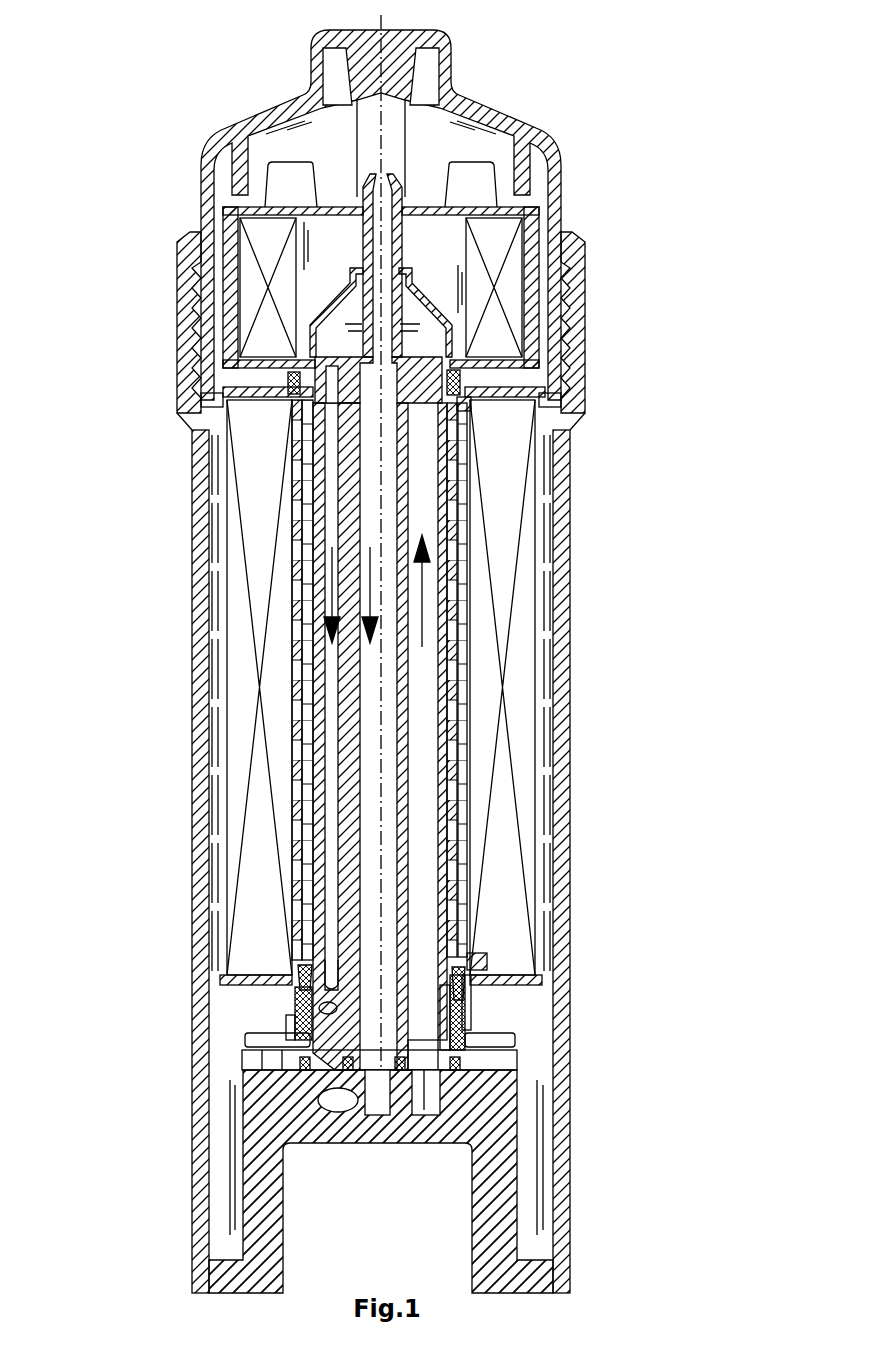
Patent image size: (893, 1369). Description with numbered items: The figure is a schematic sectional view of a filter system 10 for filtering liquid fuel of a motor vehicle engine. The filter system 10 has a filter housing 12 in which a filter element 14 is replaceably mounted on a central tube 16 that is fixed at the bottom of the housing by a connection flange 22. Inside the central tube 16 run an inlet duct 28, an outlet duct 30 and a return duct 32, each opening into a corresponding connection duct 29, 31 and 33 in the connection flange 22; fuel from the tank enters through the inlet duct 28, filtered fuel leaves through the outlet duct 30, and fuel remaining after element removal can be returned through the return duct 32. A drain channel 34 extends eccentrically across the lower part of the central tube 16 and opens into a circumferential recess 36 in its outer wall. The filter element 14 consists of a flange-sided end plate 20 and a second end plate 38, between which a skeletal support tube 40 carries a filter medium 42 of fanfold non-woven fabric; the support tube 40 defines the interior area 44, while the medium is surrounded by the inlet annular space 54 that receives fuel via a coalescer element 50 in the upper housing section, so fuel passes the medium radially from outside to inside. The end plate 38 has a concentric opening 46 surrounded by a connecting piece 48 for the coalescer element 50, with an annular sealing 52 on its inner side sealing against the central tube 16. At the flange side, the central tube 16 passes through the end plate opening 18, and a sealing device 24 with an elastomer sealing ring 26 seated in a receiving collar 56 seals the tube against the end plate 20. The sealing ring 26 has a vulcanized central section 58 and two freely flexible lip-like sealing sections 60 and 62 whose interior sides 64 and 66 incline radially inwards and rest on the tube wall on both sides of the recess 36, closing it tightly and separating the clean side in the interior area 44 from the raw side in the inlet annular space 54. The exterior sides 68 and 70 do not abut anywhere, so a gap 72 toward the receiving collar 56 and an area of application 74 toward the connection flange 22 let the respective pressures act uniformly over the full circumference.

The filter system 10 is at (158, 178).
The filter housing 12 is at (183, 681).
The filter element 14 is at (270, 600).
The central tube 16 is at (377, 611).
The flange-sided end plate opening 18 is at (468, 978).
The flange-sided end plate 20 is at (545, 982).
The connection flange 22 is at (192, 1203).
The sealing device 24 is at (430, 1020).
The sealing ring 26 is at (480, 1018).
The inlet duct 28 is at (430, 522).
The connection duct 29 is at (430, 1103).
The outlet duct 30 is at (330, 507).
The connection duct 31 is at (338, 1105).
The return duct 32 is at (362, 506).
The connection duct 33 is at (373, 1115).
The drain channel 34 is at (362, 1000).
The recess 36 is at (440, 1003).
The second end plate 38 is at (548, 388).
The support tube 40 is at (453, 617).
The filter medium 42 is at (523, 700).
The interior area 44 is at (455, 577).
The concentric opening 46 is at (470, 405).
The connecting piece 48 is at (284, 378).
The coalescer element 50 is at (546, 240).
The annular sealing 52 is at (452, 378).
The inlet annular space 54 is at (220, 718).
The receiving collar 56 is at (295, 1008).
The central section 58 is at (293, 1022).
The sealing section 60 is at (448, 972).
The sealing section 62 is at (422, 1075).
The interior side 64 is at (313, 985).
The interior side 66 is at (310, 1040).
The exterior side 68 is at (460, 972).
The exterior side 70 is at (515, 1040).
The gap 72 is at (297, 972).
The area of application 74 is at (290, 1045).